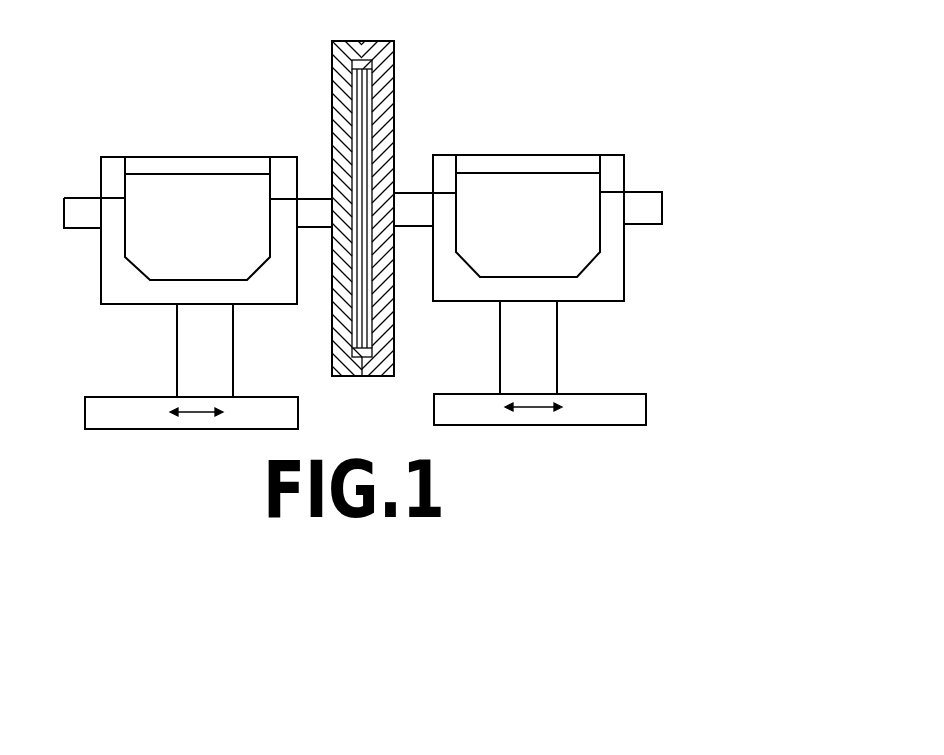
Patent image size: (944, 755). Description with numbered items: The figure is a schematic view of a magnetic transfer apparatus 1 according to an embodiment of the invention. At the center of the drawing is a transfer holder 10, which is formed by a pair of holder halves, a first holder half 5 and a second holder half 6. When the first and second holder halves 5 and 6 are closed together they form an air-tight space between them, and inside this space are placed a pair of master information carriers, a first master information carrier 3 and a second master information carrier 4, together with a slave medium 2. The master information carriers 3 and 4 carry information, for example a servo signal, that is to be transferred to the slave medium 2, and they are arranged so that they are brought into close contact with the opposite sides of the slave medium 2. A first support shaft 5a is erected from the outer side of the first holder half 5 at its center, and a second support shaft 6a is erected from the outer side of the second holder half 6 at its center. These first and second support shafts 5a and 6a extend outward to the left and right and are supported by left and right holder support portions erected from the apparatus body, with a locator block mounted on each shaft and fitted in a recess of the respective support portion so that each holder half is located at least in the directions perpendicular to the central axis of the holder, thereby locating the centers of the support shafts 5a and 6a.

The magnetic transfer apparatus 1 is at (172, 45).
The slave medium 2 is at (362, 108).
The first master information carrier 3 is at (358, 128).
The second master information carrier 4 is at (370, 133).
The first holder half 5 is at (332, 62).
The second holder half 6 is at (383, 75).
The first support shaft 5a is at (73, 228).
The second support shaft 6a is at (652, 212).
The transfer holder 10 is at (389, 35).